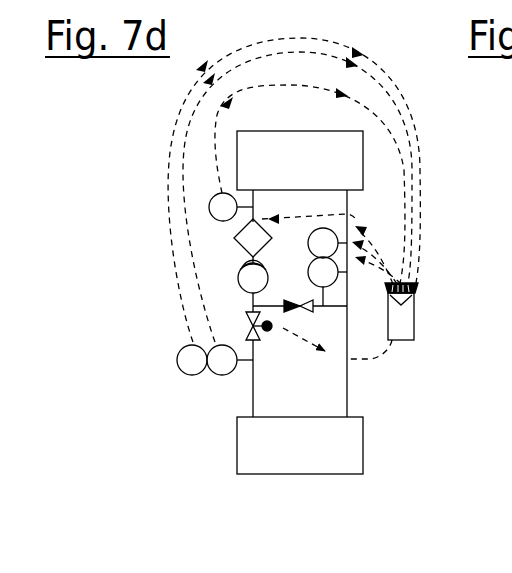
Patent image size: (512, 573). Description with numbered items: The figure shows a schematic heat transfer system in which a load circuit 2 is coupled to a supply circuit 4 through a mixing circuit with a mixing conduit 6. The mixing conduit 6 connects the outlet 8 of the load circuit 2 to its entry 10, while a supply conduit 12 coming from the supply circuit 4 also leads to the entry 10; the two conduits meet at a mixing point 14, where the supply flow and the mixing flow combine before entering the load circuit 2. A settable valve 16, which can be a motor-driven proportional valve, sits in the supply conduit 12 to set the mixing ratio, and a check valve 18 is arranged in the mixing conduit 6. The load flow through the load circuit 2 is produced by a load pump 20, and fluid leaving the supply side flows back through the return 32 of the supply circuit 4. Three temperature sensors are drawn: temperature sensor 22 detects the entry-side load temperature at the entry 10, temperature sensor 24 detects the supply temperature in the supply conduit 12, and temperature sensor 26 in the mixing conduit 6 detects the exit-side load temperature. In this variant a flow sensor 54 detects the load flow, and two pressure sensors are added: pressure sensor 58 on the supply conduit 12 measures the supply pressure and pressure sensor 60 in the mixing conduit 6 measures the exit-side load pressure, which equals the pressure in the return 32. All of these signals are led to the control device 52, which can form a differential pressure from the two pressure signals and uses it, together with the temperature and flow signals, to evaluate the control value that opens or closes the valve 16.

The load circuit 2 is at (307, 174).
The supply circuit 4 is at (308, 458).
The mixing conduit 6 is at (327, 306).
The outlet 8 is at (347, 212).
The entry 10 is at (256, 207).
The supply conduit 12 is at (253, 403).
The mixing point 14 is at (253, 306).
The valve 16 is at (260, 338).
The check valve 18 is at (298, 310).
The load pump 20 is at (239, 279).
The temperature sensor 22 is at (211, 198).
The temperature sensor 24 is at (216, 373).
The temperature sensor 26 is at (347, 290).
The return 32 is at (347, 410).
The control device 52 is at (414, 322).
The flow sensor 54 is at (233, 240).
The pressure sensor 58 is at (181, 372).
The pressure sensor 60 is at (308, 266).